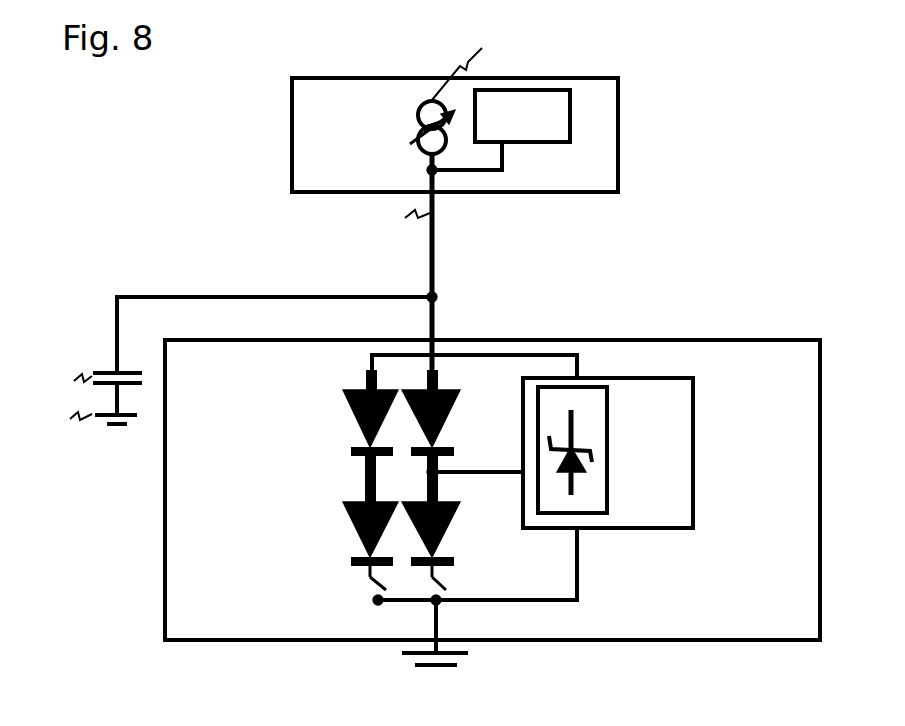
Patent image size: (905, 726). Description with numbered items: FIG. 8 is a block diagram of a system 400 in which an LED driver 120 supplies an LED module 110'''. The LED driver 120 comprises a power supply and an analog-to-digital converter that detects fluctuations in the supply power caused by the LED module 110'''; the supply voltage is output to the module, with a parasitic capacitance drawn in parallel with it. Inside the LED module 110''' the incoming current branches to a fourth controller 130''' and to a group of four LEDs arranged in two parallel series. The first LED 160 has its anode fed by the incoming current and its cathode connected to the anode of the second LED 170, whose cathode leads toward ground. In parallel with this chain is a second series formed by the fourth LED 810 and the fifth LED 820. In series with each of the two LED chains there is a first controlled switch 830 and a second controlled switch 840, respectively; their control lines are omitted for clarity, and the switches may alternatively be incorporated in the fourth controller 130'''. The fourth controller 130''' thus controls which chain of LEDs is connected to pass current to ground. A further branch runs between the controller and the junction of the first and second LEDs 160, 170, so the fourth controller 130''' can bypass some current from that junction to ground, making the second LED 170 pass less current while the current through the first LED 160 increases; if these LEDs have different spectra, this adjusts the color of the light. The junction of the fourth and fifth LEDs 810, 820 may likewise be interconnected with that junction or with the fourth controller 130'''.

The power supply system 400 is at (278, 50).
The LED driver 120 is at (647, 48).
The LED module 110''' is at (492, 461).
The fourth controller 130''' is at (613, 507).
The first LED 160 is at (455, 392).
The second LED 170 is at (443, 547).
The fourth LED 810 is at (345, 392).
The fifth LED 820 is at (345, 505).
The first controlled switch 830 is at (437, 588).
The second controlled switch 840 is at (371, 585).